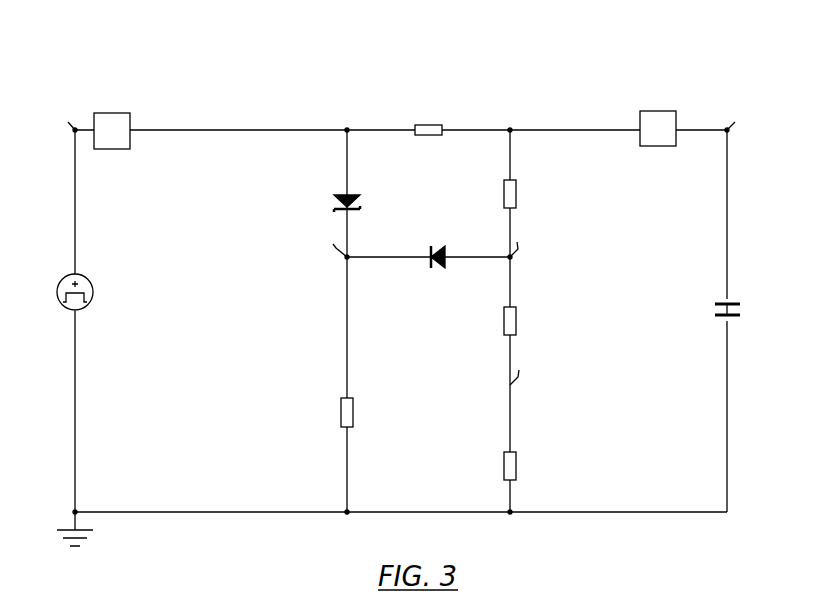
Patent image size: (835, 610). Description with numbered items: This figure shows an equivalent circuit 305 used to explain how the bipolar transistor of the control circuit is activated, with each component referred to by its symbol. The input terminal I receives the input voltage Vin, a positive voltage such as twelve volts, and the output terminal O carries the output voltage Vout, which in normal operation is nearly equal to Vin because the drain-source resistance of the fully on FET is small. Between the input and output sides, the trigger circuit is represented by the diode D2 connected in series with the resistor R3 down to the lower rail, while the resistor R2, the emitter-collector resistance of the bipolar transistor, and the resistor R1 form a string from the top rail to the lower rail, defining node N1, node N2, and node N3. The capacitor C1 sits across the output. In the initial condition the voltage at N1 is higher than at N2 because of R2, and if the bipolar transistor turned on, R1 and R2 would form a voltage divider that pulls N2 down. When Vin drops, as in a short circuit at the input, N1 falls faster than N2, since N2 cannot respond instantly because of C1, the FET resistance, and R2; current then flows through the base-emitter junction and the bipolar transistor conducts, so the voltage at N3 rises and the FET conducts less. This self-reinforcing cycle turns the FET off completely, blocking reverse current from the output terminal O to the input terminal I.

The equivalent circuit 305 is at (325, 82).
The input voltage Vin is at (68, 122).
The output voltage Vout is at (737, 116).
The input terminal I is at (112, 131).
The output terminal O is at (658, 128).
The diode D2 is at (364, 204).
The node N1 is at (333, 244).
The node N2 is at (518, 249).
The node N3 is at (518, 377).
The resistor R2 is at (532, 192).
The resistor R1 is at (541, 469).
The resistor R3 is at (378, 415).
The capacitor C1 is at (742, 312).